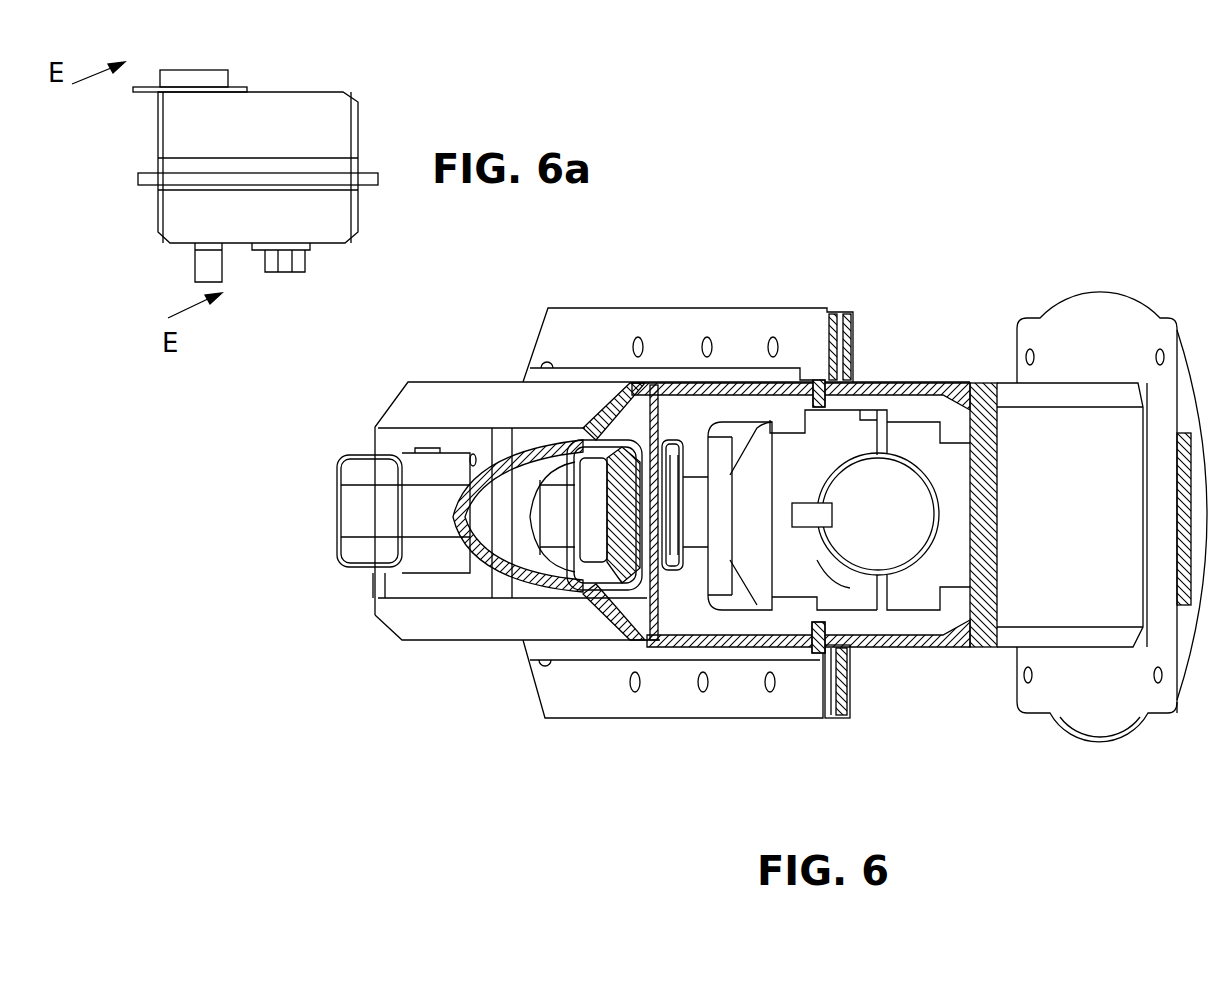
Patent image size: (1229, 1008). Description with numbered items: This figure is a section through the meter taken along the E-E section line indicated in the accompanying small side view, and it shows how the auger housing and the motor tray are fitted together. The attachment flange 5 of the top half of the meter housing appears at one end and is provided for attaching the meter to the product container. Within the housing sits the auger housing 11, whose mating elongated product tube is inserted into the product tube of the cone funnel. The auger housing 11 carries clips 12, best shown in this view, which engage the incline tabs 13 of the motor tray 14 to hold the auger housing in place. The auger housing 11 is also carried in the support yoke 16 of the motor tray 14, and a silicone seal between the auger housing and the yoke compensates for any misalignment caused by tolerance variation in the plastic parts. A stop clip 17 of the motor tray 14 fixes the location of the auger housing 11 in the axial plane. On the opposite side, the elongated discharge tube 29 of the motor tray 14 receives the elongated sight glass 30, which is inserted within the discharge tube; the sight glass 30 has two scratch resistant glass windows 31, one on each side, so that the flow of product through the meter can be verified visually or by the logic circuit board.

The attachment flange 5 is at (1085, 293).
The auger housing 11 is at (885, 530).
The clips 12 is at (878, 412).
The incline tabs 13 is at (866, 412).
The motor tray 14 is at (848, 442).
The support yoke 16 is at (823, 550).
The stop clip 17 is at (802, 512).
The elongated discharge tube 29 is at (693, 437).
The sight glass 30 is at (677, 560).
The glass windows 31 is at (667, 565).